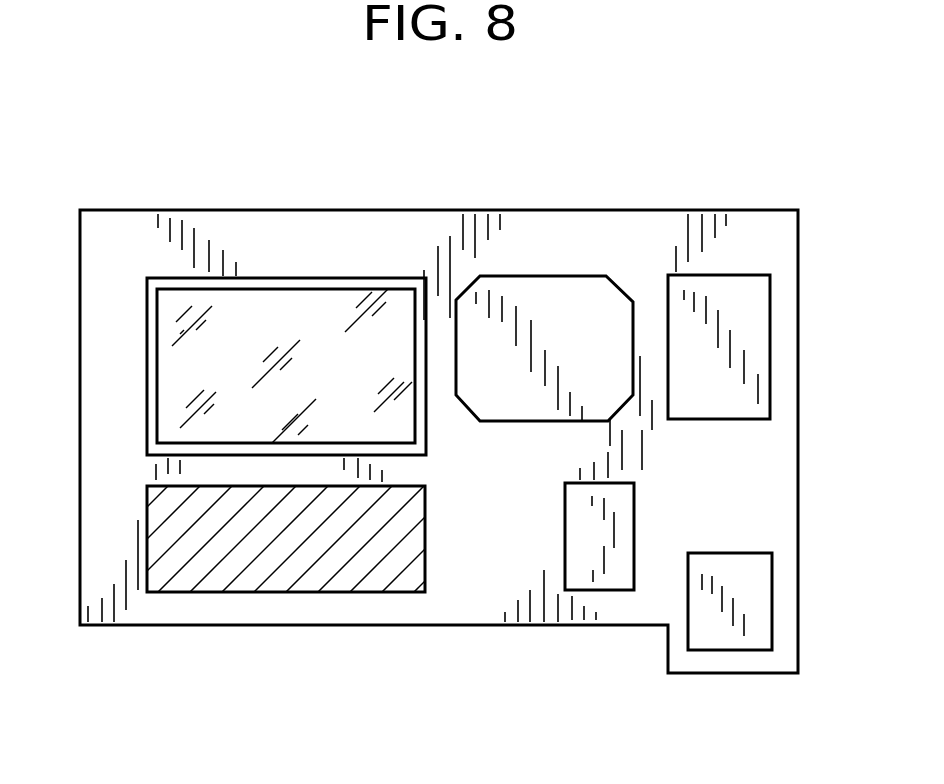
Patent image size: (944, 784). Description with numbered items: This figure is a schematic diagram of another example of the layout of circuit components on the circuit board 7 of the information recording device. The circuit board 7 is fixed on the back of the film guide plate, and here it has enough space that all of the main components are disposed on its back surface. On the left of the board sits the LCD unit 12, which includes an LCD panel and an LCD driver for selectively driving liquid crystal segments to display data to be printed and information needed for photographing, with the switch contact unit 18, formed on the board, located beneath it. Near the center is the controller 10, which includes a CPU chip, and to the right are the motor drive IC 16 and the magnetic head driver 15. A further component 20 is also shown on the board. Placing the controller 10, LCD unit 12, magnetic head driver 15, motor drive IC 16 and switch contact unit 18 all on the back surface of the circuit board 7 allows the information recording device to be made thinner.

The circuit board 7 is at (437, 210).
The LCD unit 12 is at (167, 372).
The switch contact unit 18 is at (289, 583).
The controller 10 is at (534, 398).
The motor drive IC 16 is at (750, 348).
The magnetic head driver 15 is at (576, 526).
The electronic component 20 is at (733, 563).